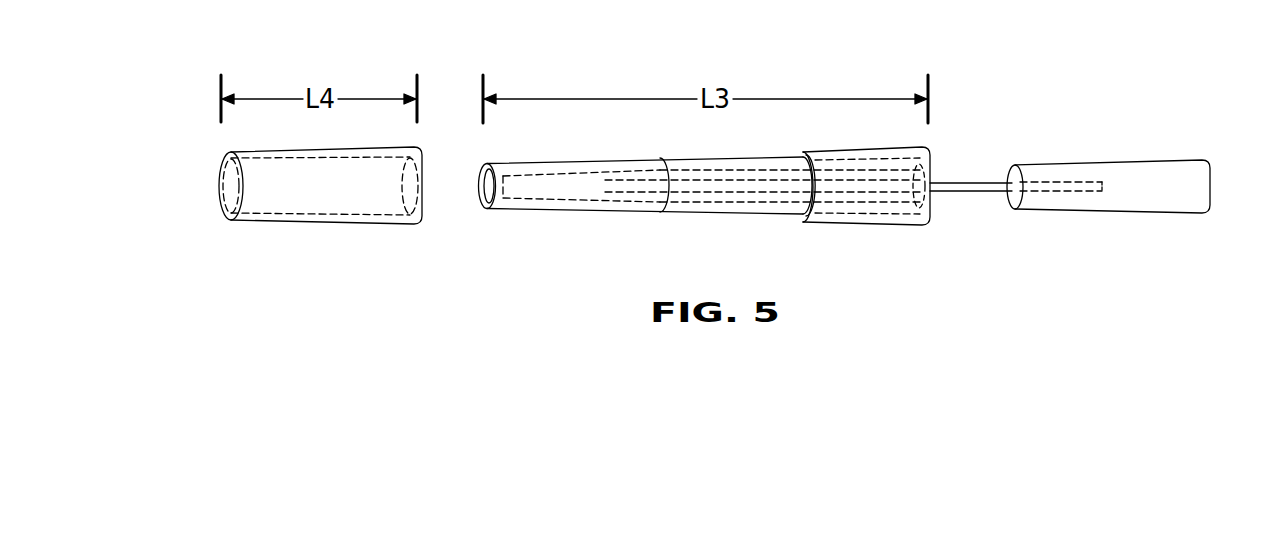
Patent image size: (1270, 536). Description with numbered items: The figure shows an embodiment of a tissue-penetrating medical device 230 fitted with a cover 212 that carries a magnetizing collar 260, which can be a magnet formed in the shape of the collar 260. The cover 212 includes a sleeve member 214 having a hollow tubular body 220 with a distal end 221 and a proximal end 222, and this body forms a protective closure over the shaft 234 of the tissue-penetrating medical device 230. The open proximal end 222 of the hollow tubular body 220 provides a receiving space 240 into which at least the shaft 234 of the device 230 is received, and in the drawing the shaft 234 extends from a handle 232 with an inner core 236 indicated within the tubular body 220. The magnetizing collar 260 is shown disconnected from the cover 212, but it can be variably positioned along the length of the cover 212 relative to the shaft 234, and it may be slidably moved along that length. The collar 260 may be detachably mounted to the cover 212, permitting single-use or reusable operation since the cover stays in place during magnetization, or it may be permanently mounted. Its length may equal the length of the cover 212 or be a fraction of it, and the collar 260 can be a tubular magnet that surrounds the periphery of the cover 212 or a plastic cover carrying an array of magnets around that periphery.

The cover 212 is at (567, 260).
The sleeve member 214 is at (473, 218).
The hollow tubular body 220 is at (518, 202).
The distal end 221 is at (482, 181).
The proximal end 222 is at (931, 152).
The tissue-penetrating medical device 230 is at (1188, 243).
The handle 232 is at (1138, 213).
The shaft 234 is at (977, 193).
The inner core 236 is at (603, 190).
The receiving space 240 is at (880, 203).
The magnetizing collar 260 is at (315, 222).